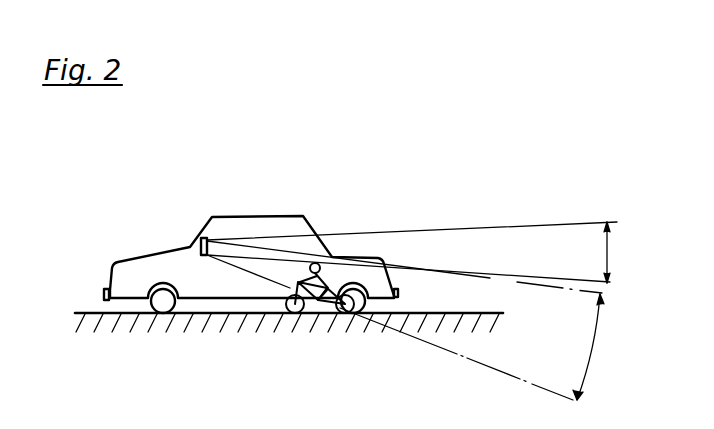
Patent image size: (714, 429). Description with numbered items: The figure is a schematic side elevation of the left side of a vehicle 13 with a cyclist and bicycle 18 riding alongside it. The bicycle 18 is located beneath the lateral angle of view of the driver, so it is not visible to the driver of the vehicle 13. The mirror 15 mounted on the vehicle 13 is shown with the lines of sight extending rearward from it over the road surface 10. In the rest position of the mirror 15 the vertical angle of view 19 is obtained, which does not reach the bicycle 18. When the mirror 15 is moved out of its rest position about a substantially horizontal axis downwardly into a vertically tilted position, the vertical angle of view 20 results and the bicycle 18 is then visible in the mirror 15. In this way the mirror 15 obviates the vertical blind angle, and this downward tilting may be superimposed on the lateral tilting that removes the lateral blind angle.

The road surface 10 is at (454, 311).
The vehicle 13 is at (143, 266).
The mirror 15 is at (204, 238).
The bicycle 18 is at (292, 293).
The vertical angle of view 19 is at (595, 252).
The vertical angle of view 20 is at (580, 347).